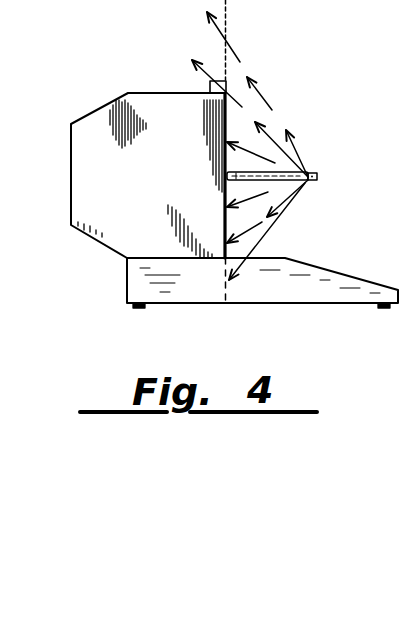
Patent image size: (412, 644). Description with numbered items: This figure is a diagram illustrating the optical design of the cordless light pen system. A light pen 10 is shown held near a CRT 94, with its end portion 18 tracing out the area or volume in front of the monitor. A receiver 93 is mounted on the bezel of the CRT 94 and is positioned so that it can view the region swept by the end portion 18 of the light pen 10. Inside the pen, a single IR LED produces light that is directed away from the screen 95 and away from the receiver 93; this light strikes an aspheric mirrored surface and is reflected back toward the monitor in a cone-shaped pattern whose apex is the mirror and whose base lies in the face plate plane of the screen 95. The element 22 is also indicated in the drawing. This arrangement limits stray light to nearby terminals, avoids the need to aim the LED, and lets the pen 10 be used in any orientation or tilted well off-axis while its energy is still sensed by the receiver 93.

The light pen 10 is at (278, 163).
The end portion of the light pen 18 is at (312, 172).
The light emitting end of lamp 22 is at (309, 183).
The receiver 93 is at (227, 76).
The CRT 94 is at (165, 178).
The screen of the monitor 95 is at (227, 122).